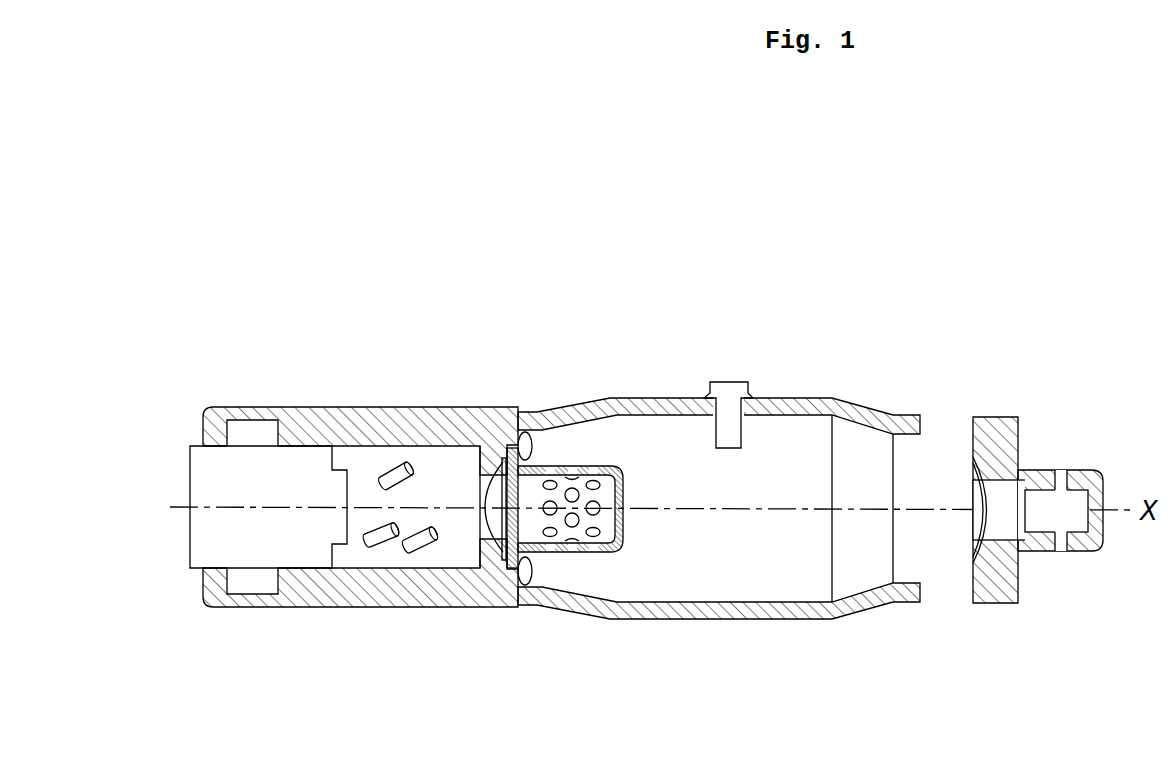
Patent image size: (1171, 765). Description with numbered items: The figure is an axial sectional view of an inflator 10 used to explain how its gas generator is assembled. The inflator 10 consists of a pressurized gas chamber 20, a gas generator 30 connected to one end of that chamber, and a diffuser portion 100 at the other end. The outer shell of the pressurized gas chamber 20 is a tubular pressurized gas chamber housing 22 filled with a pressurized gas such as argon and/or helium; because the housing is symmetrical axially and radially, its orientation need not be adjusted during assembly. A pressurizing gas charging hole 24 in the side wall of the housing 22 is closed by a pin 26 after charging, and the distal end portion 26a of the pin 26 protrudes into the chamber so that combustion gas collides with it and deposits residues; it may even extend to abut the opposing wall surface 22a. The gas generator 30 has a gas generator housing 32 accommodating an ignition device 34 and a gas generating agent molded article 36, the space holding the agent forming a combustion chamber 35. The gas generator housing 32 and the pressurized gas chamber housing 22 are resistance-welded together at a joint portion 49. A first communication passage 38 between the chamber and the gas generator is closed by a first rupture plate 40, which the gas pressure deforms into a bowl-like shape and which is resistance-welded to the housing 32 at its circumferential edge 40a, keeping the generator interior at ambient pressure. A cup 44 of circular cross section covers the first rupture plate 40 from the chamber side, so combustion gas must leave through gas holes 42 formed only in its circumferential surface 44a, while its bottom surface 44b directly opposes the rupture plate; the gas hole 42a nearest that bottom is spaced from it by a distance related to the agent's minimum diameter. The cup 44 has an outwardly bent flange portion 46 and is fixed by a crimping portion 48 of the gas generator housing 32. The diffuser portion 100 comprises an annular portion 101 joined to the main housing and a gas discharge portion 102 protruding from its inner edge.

The inflator 10 is at (710, 485).
The pressurized gas chamber 20 is at (786, 572).
The pressurized gas chamber housing 22 is at (785, 400).
The opposing wall surface 22a is at (700, 588).
The pressurizing gas charging hole 24 is at (745, 420).
The pin 26 is at (728, 393).
The distal end portion 26a is at (727, 448).
The gas generator 30 is at (354, 481).
The gas generator housing 32 is at (412, 407).
The ignition device 34 is at (300, 553).
The combustion chamber 35 is at (462, 506).
The gas generating agent molded article 36 is at (367, 540).
The first communication passage 38 is at (487, 407).
The first rupture plate 40 is at (487, 560).
The circumferential edge 40a is at (503, 565).
The gas holes 42 is at (585, 557).
The gas hole closest to the cup bottom surface 42a is at (597, 506).
The cup 44 is at (610, 553).
The circumferential surface 44a is at (563, 553).
The bottom surface 44b is at (610, 525).
The flange portion 46 is at (509, 440).
The crimping portion 48 is at (525, 452).
The joint portion 49 is at (522, 445).
The diffuser portion 100 is at (1050, 476).
The annular portion 101 is at (1022, 433).
The gas discharge portion 102 is at (1080, 465).